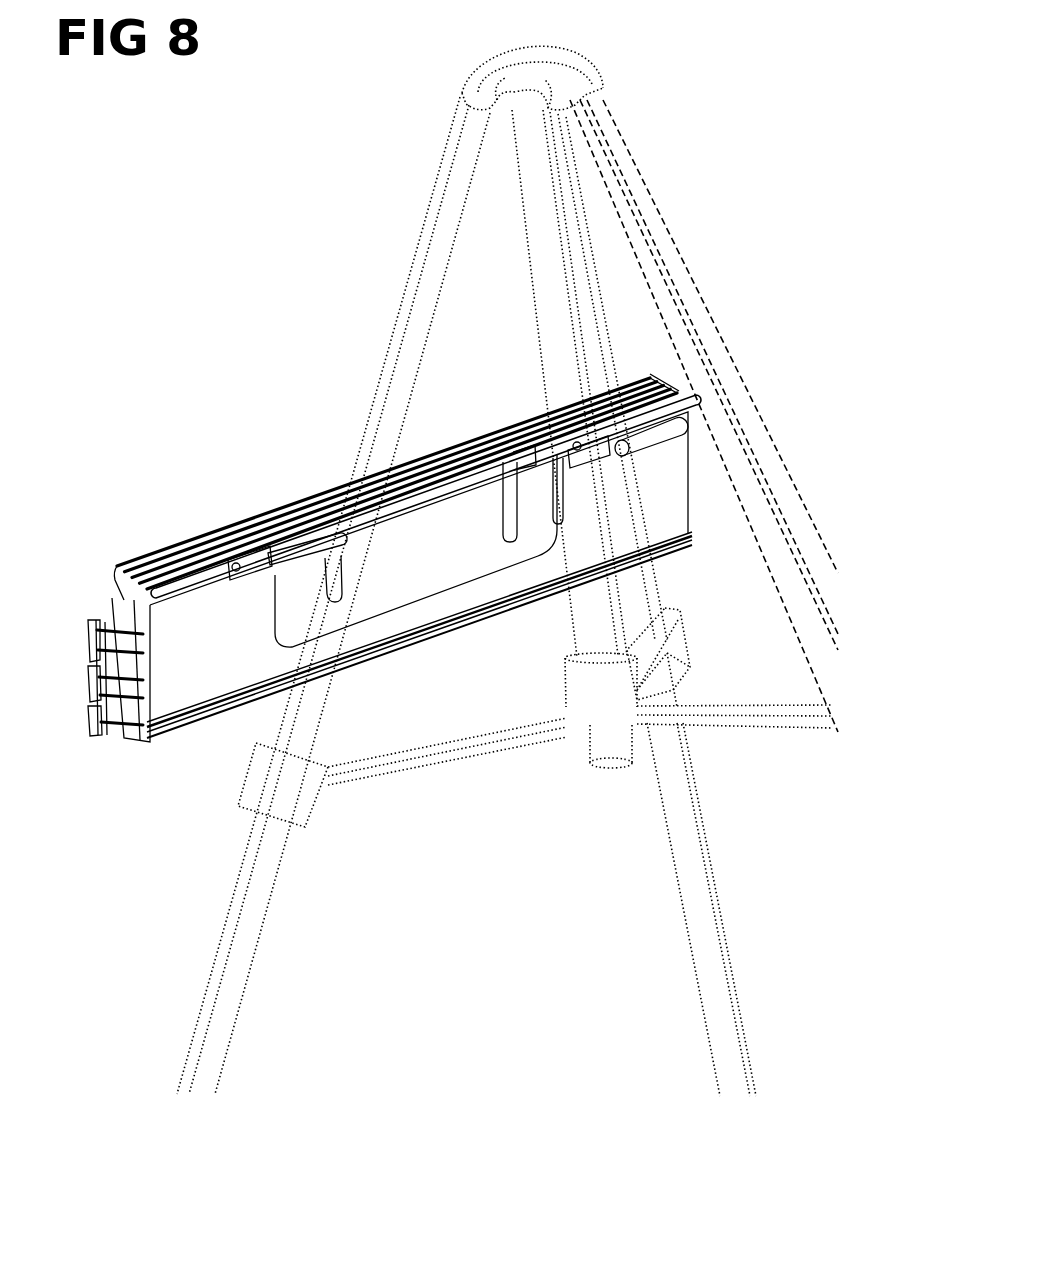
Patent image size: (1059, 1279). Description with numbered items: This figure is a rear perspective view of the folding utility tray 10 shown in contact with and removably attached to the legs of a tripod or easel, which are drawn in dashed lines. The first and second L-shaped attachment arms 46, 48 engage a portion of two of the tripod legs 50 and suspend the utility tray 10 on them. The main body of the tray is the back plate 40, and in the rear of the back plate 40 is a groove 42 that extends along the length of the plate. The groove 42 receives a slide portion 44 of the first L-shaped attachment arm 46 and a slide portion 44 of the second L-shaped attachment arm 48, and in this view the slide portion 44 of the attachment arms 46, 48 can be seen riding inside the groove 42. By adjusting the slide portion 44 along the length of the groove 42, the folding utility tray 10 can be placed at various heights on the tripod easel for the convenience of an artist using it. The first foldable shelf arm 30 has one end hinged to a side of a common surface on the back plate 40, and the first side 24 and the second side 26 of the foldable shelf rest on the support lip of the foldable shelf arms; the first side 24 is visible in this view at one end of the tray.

The folding utility tray 10 is at (440, 554).
The first side 24 is at (127, 560).
The second side 26 is at (653, 382).
The first foldable shelf arm 30 is at (107, 610).
The back plate 40 is at (208, 657).
The groove 42 is at (158, 577).
The slide portion 44 is at (253, 567).
The first L-shaped attachment arm 46 is at (323, 530).
The second L-shaped attachment arm 48 is at (663, 430).
The tripod legs 50 is at (667, 260).